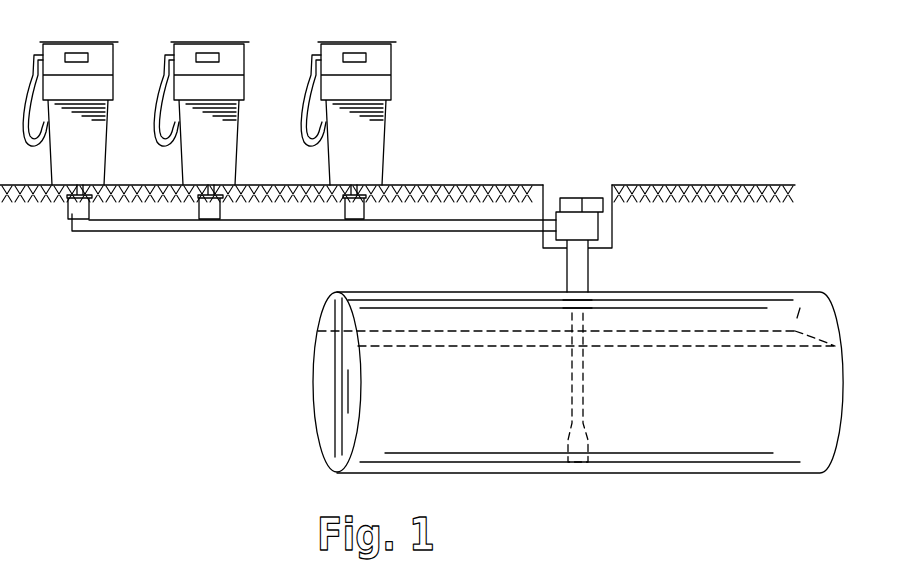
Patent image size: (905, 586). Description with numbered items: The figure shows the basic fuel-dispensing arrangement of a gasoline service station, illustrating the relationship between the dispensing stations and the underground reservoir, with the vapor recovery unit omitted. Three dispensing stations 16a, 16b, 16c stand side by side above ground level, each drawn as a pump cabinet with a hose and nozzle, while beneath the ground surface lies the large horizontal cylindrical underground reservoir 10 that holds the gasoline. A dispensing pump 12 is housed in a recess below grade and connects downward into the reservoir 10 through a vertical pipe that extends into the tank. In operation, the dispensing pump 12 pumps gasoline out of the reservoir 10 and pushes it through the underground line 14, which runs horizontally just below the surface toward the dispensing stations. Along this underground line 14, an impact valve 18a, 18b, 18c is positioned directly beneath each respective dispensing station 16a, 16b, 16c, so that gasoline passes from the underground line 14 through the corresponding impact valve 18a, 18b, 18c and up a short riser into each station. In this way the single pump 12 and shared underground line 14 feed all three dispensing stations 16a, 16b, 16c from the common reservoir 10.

The underground reservoir 10 is at (481, 397).
The dispensing pump 12 is at (594, 226).
The underground line 14 is at (268, 231).
The dispensing station 16a is at (42, 44).
The dispensing station 16b is at (173, 44).
The dispensing station 16c is at (320, 44).
The impact valve 18a is at (70, 212).
The impact valve 18b is at (200, 213).
The impact valve 18c is at (345, 214).